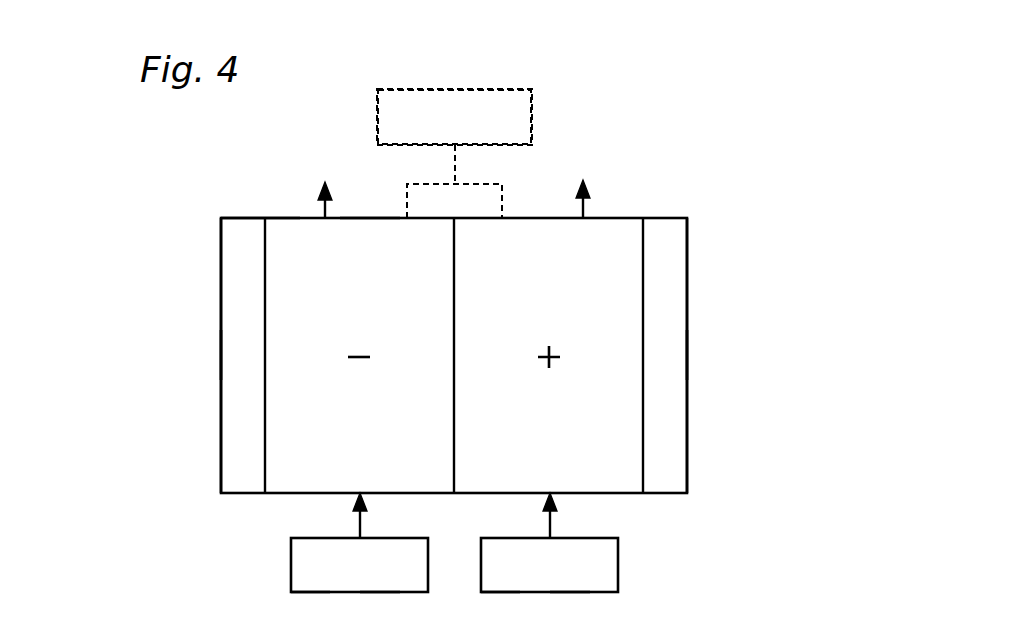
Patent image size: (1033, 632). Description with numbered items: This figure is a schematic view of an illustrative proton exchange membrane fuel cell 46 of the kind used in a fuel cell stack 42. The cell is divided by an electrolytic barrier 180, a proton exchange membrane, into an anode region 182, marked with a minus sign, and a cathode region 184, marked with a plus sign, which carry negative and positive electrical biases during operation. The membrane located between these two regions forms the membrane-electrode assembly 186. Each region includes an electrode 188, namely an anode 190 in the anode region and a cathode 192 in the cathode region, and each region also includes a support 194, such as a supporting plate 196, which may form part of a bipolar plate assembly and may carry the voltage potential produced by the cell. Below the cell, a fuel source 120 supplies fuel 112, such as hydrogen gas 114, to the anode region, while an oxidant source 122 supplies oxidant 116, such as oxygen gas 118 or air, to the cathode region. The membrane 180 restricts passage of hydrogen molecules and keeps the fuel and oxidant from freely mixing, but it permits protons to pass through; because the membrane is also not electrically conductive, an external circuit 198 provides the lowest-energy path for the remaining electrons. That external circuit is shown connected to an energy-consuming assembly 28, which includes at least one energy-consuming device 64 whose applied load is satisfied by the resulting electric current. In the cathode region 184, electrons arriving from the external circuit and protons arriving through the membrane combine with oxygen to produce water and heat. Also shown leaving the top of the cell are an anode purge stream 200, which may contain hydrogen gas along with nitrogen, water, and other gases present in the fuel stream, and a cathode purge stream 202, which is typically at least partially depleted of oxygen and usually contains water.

The energy-consuming assembly 28 is at (437, 87).
The energy-consuming device 64 is at (490, 89).
The external circuit 198 is at (425, 183).
The membrane-electrode assembly 186 is at (366, 214).
The anode purge stream 200 is at (322, 210).
The cathode purge stream 202 is at (586, 210).
The fuel cell stack 42 is at (197, 212).
The fuel cell 46 is at (256, 212).
The support 194 is at (219, 298).
The supporting plate 196 is at (221, 352).
The anode region 182 is at (262, 412).
The cathode region 184 is at (648, 412).
The electrolytic barrier 180 is at (453, 318).
The electrode 188 is at (281, 480).
The anode 190 is at (337, 480).
The cathode 192 is at (567, 480).
The fuel source 120 is at (285, 582).
The fuel 112 is at (311, 579).
The hydrogen gas 114 is at (380, 582).
The oxidant source 122 is at (622, 580).
The oxidant 116 is at (499, 579).
The oxygen gas 118 is at (571, 582).